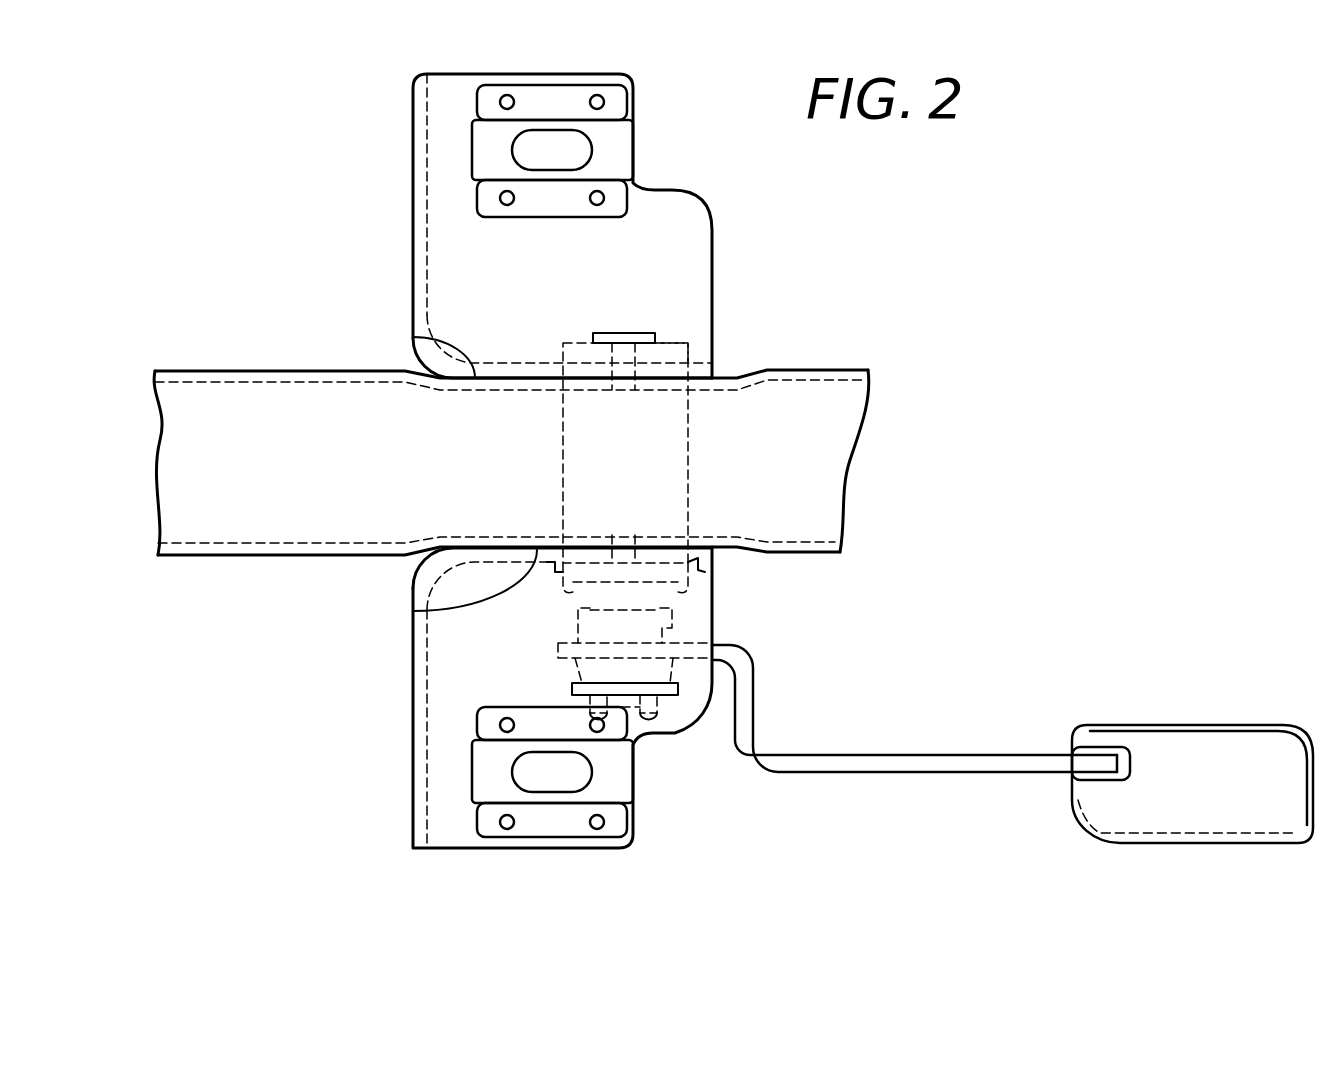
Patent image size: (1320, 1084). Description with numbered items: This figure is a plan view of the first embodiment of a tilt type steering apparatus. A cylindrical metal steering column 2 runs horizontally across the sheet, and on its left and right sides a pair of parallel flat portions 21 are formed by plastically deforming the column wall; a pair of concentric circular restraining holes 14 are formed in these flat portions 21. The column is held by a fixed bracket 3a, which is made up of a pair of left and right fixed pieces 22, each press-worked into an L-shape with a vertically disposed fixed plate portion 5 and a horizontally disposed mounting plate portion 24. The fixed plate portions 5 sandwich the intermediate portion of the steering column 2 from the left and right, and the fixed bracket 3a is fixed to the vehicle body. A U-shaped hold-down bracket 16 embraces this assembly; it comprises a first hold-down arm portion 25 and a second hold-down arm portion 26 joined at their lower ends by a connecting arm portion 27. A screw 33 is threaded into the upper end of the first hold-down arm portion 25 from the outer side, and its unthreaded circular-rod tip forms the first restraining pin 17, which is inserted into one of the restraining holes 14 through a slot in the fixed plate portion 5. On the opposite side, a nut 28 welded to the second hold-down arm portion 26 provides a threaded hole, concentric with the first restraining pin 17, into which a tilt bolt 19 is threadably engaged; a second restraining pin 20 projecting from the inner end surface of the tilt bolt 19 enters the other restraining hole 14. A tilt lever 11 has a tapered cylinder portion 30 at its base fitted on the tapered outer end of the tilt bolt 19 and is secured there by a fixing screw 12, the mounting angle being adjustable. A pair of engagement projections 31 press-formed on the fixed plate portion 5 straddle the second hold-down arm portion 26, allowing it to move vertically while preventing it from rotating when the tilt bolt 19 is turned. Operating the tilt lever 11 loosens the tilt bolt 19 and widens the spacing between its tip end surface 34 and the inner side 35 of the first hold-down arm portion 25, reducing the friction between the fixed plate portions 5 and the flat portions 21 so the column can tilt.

The steering column 2 is at (815, 368).
The fixed bracket 3a is at (635, 855).
The fixed plate portion 5 is at (430, 315).
The tilt lever 11 is at (973, 766).
The fixing screw 12 is at (637, 713).
The restraining hole 14 is at (628, 382).
The hold-down bracket 16 is at (577, 343).
The first restraining pin 17 is at (613, 372).
The tilt bolt 19 is at (680, 630).
The second restraining pin 20 is at (632, 557).
The flat portion 21 is at (413, 337).
The fixed piece 22 is at (440, 800).
The mounting plate portion 24 is at (440, 213).
The first hold-down arm portion 25 is at (680, 355).
The second hold-down arm portion 26 is at (693, 578).
The connecting arm portion 27 is at (680, 502).
The nut 28 is at (677, 602).
The tapered cylinder portion 30 is at (677, 673).
The engagement projection 31 is at (680, 573).
The screw 33 is at (630, 333).
The tip end surface 34 is at (588, 558).
The inner side 35 is at (653, 378).